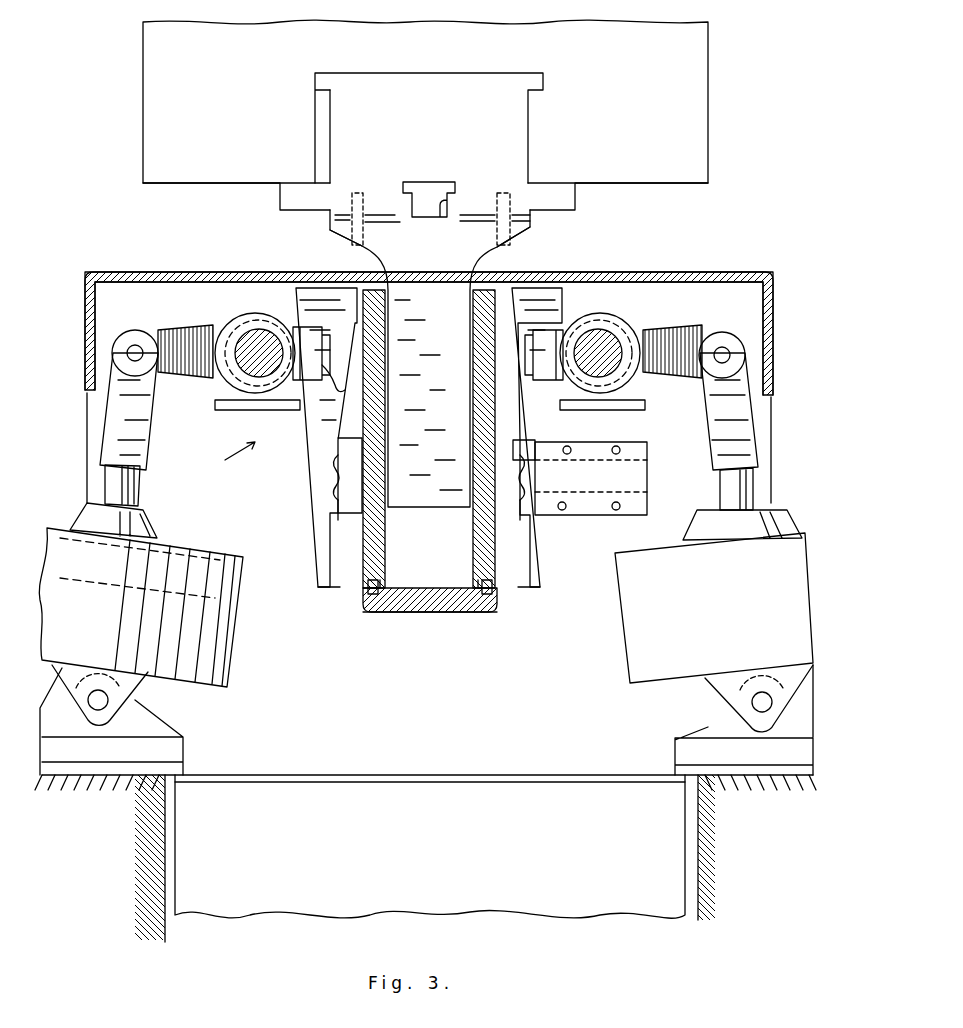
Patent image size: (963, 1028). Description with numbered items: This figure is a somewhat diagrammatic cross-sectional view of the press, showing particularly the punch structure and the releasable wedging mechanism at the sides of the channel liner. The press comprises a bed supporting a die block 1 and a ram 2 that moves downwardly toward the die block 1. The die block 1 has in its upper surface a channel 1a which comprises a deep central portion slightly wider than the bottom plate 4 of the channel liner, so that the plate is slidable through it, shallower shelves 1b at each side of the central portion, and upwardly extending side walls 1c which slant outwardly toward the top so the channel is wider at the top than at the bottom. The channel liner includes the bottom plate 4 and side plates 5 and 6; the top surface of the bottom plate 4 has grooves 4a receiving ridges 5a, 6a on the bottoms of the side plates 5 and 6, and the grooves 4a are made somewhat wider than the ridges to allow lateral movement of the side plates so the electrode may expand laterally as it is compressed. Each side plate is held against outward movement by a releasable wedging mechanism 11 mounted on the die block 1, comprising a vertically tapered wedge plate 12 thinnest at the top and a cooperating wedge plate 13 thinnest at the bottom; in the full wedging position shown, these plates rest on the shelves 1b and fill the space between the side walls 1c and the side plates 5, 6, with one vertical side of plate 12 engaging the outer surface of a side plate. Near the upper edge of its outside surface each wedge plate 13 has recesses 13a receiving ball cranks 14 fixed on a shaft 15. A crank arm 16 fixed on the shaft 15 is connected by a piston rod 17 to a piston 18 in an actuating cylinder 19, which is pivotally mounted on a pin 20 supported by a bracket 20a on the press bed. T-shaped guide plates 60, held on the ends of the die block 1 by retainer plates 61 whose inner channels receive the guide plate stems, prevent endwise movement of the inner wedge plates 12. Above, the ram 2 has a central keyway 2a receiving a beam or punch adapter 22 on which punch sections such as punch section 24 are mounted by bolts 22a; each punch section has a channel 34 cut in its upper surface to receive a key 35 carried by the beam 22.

The die block 1 is at (427, 527).
The channel 1a is at (438, 612).
The shelves 1b is at (338, 590).
The side walls 1c is at (315, 514).
The ram 2 is at (143, 80).
The central keyway 2a is at (330, 128).
The bottom plate 4 is at (410, 600).
The grooves 4a is at (374, 612).
The side plate 5 is at (372, 300).
The ridge 5a is at (372, 586).
The side plate 6 is at (510, 300).
The ridge 6a is at (490, 588).
The releasable wedging mechanism 11 is at (234, 456).
The wedge plate 12 is at (340, 542).
The wedge plate 13 is at (318, 440).
The recesses 13a is at (322, 368).
The ball cranks 14 is at (300, 390).
The shaft 15 is at (245, 335).
The crank arm 16 is at (180, 338).
The piston rod 17 is at (145, 436).
The piston 18 is at (200, 548).
The actuating cylinder 19 is at (230, 663).
The pins 20 is at (108, 700).
The brackets 20a is at (160, 735).
The beam or punch adapter 22 is at (429, 128).
The bolts 22a is at (348, 242).
The punch section 24 is at (430, 358).
The channel 34 is at (452, 204).
The key 35 is at (425, 188).
The T-shaped guide plates 60 is at (336, 478).
The retainer plates 61 is at (640, 480).